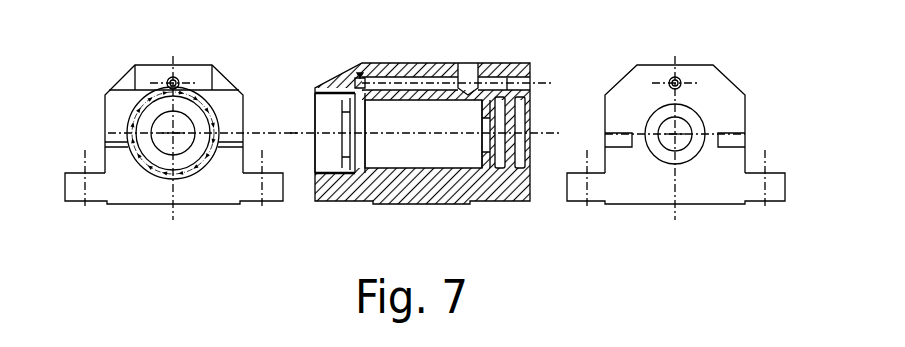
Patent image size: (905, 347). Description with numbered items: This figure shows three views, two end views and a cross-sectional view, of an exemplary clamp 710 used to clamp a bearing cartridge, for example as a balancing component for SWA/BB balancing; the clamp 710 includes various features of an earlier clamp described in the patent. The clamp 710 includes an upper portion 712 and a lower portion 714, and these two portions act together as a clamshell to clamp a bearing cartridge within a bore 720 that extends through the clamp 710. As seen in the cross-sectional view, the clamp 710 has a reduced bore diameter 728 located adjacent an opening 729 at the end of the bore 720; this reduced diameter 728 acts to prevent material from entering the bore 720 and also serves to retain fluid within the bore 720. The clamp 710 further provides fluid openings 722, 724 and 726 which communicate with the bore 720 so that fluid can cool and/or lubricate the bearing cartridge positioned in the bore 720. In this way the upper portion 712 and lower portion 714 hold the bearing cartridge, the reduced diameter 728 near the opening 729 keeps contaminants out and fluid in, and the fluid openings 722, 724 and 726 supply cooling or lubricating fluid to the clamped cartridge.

The clamp 710 is at (192, 33).
The upper portion 712 is at (105, 95).
The lower portion 714 is at (93, 203).
The bore 720 is at (433, 165).
The fluid opening 722 is at (474, 66).
The fluid opening 724 is at (531, 77).
The fluid opening 726 is at (360, 74).
The reduced bore diameter 728 is at (173, 155).
The opening 729 is at (173, 155).